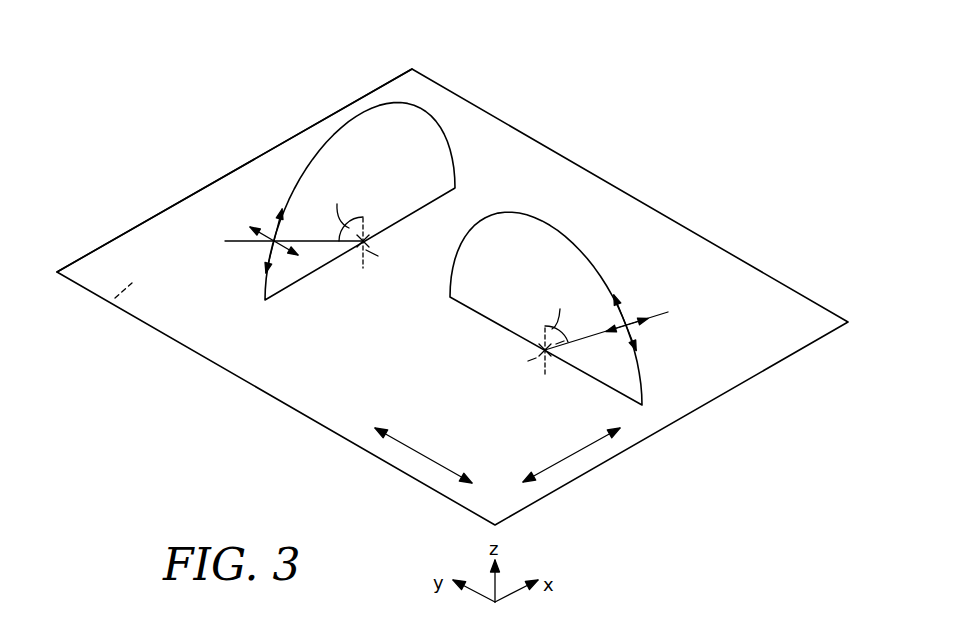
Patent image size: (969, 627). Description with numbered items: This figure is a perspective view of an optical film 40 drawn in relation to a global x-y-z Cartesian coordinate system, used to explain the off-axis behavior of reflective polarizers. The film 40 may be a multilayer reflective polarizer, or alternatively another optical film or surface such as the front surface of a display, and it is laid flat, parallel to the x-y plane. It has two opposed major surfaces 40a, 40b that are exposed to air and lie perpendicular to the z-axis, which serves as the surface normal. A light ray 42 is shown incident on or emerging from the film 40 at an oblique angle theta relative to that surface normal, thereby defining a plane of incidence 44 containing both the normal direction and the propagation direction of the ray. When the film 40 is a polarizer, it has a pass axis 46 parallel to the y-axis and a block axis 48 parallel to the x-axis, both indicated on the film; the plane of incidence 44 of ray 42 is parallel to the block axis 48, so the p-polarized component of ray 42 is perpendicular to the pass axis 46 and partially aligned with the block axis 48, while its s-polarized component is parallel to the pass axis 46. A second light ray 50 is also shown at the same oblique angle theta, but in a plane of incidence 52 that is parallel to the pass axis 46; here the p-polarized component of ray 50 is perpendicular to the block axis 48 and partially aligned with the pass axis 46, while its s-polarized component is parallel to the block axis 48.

The optical film 40 is at (183, 326).
The major surface 40a is at (113, 260).
The major surface 40b is at (110, 302).
The light ray 42 is at (236, 238).
The plane of incidence 44 is at (353, 119).
The pass axis 46 is at (418, 454).
The block axis 48 is at (577, 453).
The light ray 50 is at (662, 316).
The plane of incidence 52 is at (557, 224).